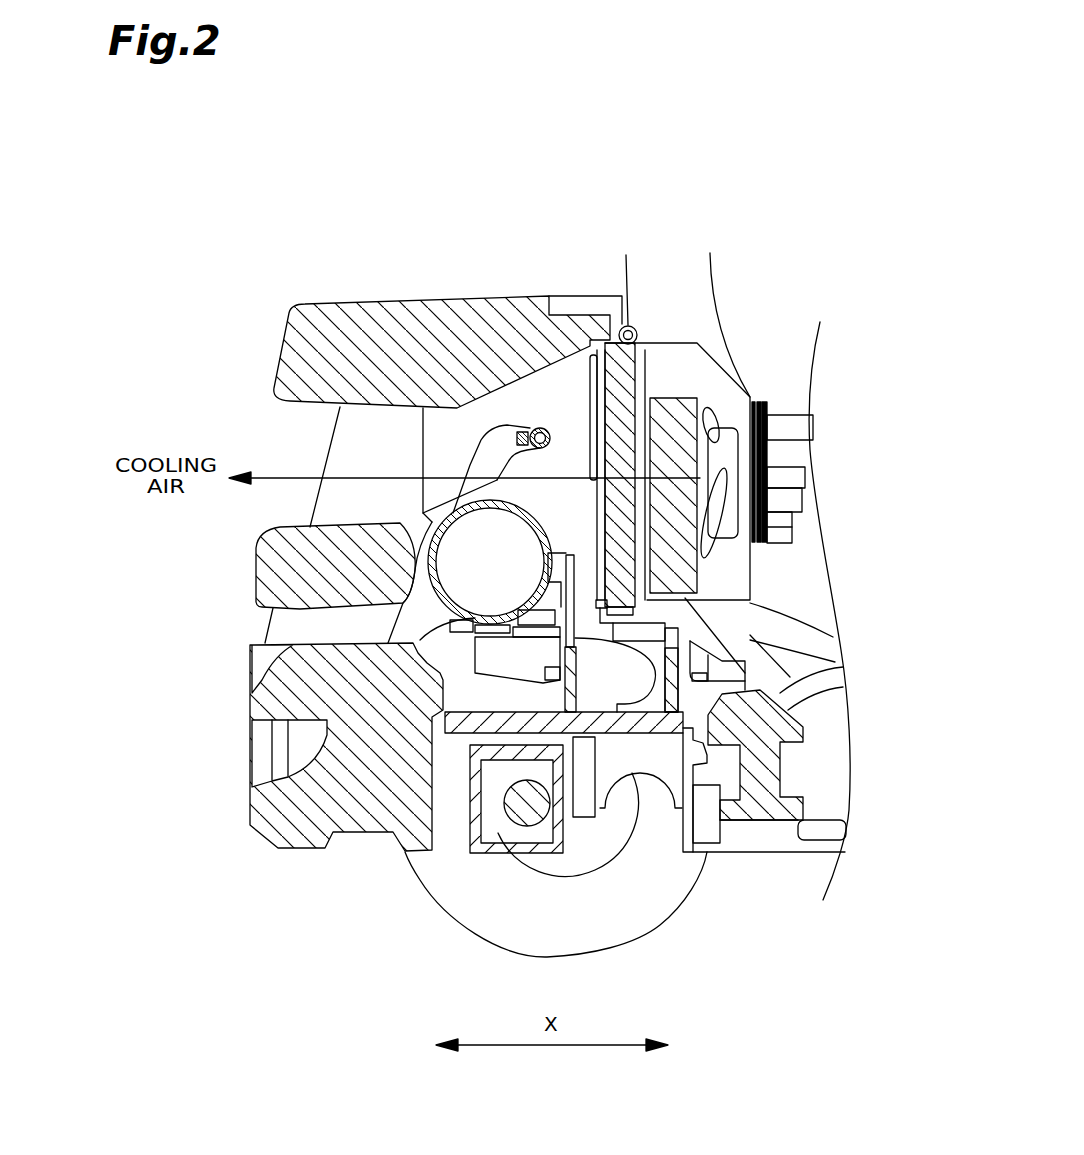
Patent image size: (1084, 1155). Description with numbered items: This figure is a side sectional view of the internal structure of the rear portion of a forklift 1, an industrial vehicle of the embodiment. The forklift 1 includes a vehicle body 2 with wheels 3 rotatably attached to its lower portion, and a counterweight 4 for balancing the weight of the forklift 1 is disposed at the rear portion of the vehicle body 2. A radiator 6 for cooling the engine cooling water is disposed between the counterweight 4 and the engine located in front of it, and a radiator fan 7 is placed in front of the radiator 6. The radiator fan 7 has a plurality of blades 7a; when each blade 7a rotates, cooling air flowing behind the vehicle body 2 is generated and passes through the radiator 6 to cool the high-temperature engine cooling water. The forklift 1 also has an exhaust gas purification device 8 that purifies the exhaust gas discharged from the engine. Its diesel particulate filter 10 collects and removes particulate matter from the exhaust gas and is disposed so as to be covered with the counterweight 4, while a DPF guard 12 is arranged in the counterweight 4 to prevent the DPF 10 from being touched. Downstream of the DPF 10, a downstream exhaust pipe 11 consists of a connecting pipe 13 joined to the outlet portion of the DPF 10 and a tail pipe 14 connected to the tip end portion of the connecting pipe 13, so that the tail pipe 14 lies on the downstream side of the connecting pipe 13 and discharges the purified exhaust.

The forklift 1 is at (697, 161).
The vehicle body 2 is at (528, 294).
The wheels 3 is at (443, 888).
The counterweight 4 is at (340, 335).
The radiator 6 is at (628, 388).
The radiator fan 7 is at (733, 453).
The blades 7a is at (720, 417).
The exhaust gas purification device 8 is at (494, 427).
The diesel particulate filter (DPF) 10 is at (440, 546).
The downstream exhaust pipe 11 is at (467, 467).
The DPF guard 12 is at (437, 500).
The connecting pipe 13 is at (493, 487).
The tail pipe 14 is at (542, 428).